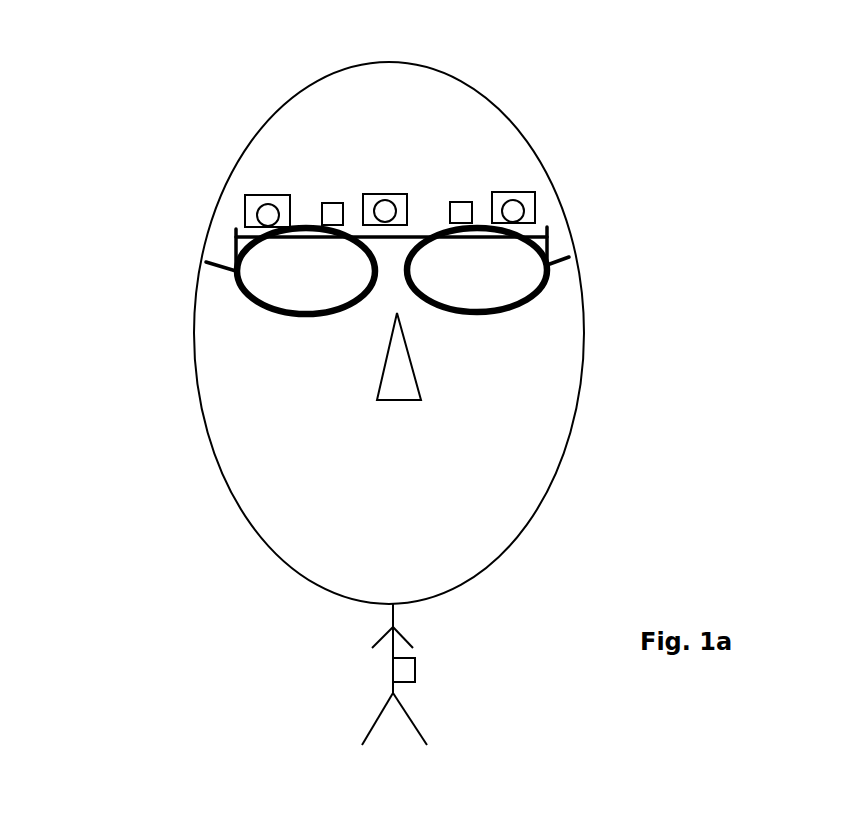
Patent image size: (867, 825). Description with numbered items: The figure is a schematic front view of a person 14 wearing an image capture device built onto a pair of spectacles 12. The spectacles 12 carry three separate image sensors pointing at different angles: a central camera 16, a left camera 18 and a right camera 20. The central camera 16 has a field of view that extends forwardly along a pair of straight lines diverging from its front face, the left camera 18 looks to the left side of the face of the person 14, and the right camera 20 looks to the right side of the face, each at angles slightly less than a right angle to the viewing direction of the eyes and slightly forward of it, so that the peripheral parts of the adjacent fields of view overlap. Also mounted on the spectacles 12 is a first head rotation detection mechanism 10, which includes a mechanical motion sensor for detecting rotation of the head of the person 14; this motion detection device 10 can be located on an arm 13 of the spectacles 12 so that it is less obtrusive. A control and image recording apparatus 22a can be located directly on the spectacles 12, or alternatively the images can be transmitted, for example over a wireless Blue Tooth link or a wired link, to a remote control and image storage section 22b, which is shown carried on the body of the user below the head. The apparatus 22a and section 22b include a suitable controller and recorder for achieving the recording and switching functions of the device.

The head rotation detection mechanism 10 is at (312, 196).
The pair of spectacles 12 is at (553, 302).
The arm 13 is at (582, 259).
The person 14 is at (250, 442).
The central camera 16 is at (365, 187).
The left camera 18 is at (550, 195).
The right camera 20 is at (232, 204).
The control and image recording apparatus 22a is at (480, 187).
The remote control and image storage section 22b is at (427, 689).